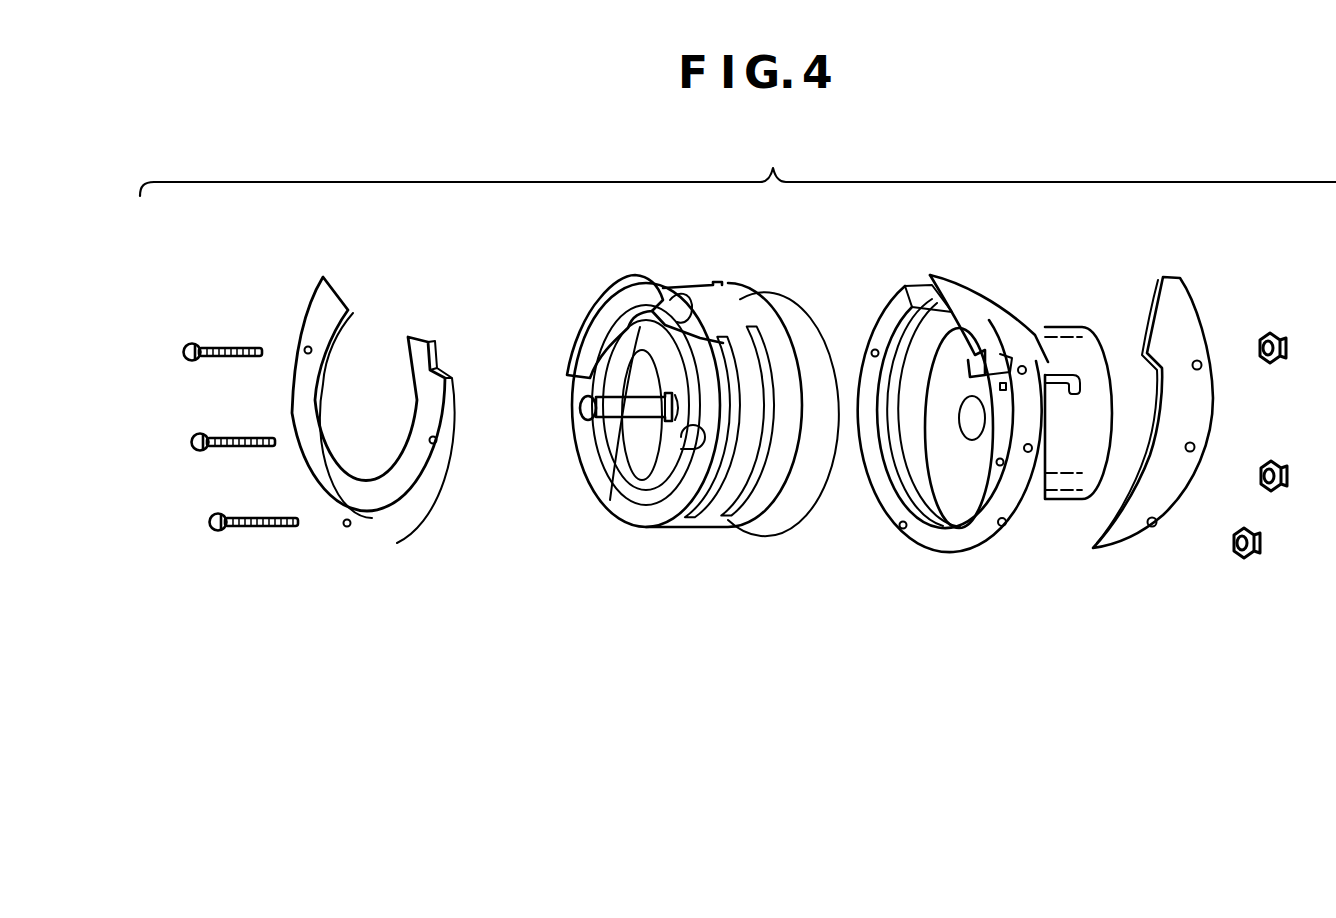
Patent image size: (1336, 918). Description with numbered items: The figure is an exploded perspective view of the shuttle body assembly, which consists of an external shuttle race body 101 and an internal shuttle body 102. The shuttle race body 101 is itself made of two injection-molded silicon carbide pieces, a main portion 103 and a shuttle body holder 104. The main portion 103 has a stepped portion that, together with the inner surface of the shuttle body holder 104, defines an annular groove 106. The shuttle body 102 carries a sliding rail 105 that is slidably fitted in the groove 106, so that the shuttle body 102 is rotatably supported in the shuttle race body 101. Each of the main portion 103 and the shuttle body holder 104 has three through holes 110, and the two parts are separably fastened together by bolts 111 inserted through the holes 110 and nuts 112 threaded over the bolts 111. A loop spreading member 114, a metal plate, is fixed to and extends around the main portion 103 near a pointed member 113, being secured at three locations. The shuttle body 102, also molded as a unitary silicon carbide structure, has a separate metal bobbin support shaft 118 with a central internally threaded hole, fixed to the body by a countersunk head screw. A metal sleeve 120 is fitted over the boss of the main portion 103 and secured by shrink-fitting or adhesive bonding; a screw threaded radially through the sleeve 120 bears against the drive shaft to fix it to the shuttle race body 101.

The external shuttle race body 101 is at (985, 428).
The internal shuttle body 102 is at (694, 382).
The main portion 103 is at (1010, 512).
The shuttle body holder 104 is at (378, 528).
The sliding rail 105 is at (750, 482).
The annular groove 106 is at (928, 514).
The through holes 110 is at (312, 353).
The bolts 111 is at (193, 360).
The nuts 112 is at (1278, 335).
The pointed member 113 is at (947, 285).
The loop spreading member 114 is at (1196, 425).
The bobbin support shaft 118 is at (613, 500).
The sleeve 120 is at (1062, 350).